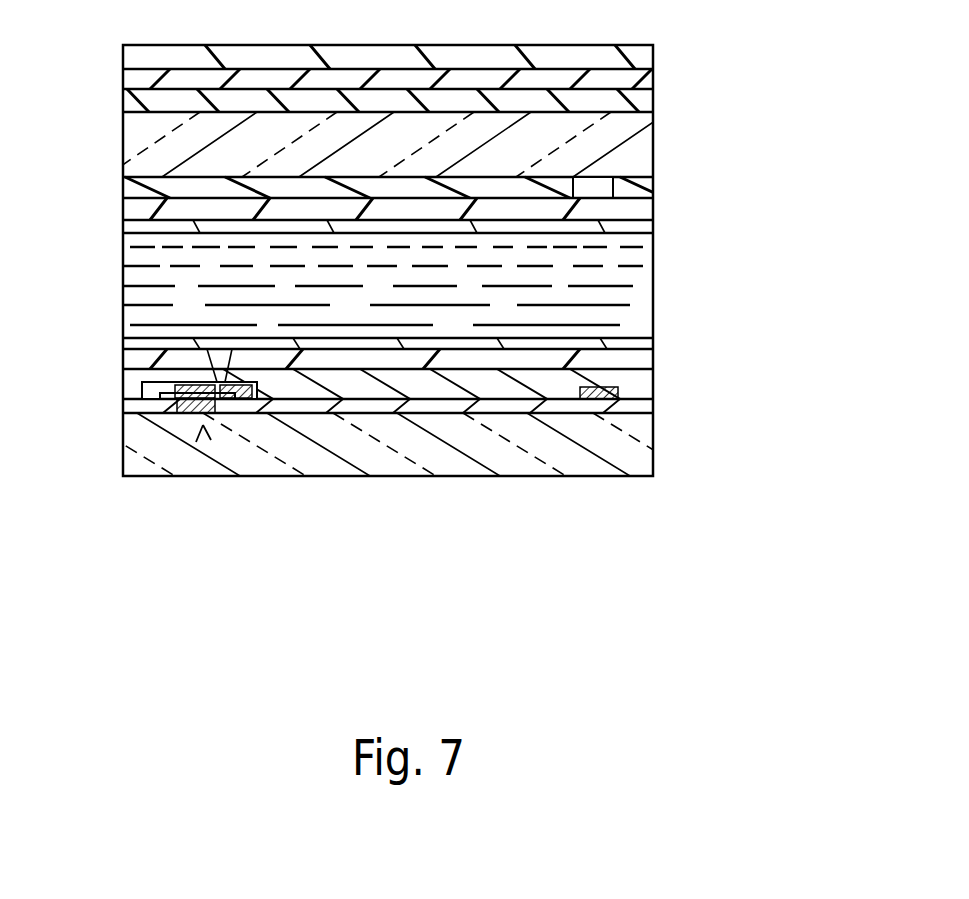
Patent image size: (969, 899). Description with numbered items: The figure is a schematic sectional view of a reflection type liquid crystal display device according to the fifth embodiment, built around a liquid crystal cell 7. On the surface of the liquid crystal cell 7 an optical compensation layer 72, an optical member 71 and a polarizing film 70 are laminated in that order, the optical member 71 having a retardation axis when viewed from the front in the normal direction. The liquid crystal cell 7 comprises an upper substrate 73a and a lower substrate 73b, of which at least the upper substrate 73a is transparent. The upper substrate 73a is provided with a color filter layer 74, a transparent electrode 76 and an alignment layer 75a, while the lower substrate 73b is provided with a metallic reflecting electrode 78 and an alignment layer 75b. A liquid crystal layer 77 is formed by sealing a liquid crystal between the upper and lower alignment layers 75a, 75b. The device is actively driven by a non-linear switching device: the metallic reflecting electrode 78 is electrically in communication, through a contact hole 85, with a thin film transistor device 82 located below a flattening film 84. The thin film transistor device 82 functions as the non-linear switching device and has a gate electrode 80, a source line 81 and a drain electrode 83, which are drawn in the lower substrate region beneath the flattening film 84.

The liquid crystal cell 7 is at (837, 137).
The polarizing film 70 is at (655, 57).
The optical member 71 is at (655, 80).
The optical compensation layer 72 is at (655, 100).
The upper substrate 73a is at (655, 143).
The color filter layer 74 is at (655, 187).
The transparent electrode 76 is at (655, 208).
The alignment layer 75a is at (655, 228).
The liquid crystal layer 77 is at (655, 278).
The alignment layer 75b is at (655, 342).
The metallic reflecting electrode 78 is at (655, 362).
The flattening film 84 is at (655, 393).
The lower substrate 73b is at (655, 448).
The contact hole 85 is at (190, 390).
The drain electrode 83 is at (250, 394).
The gate electrode 80 is at (178, 412).
The thin film transistor device 82 is at (204, 428).
The source line 81 is at (602, 399).